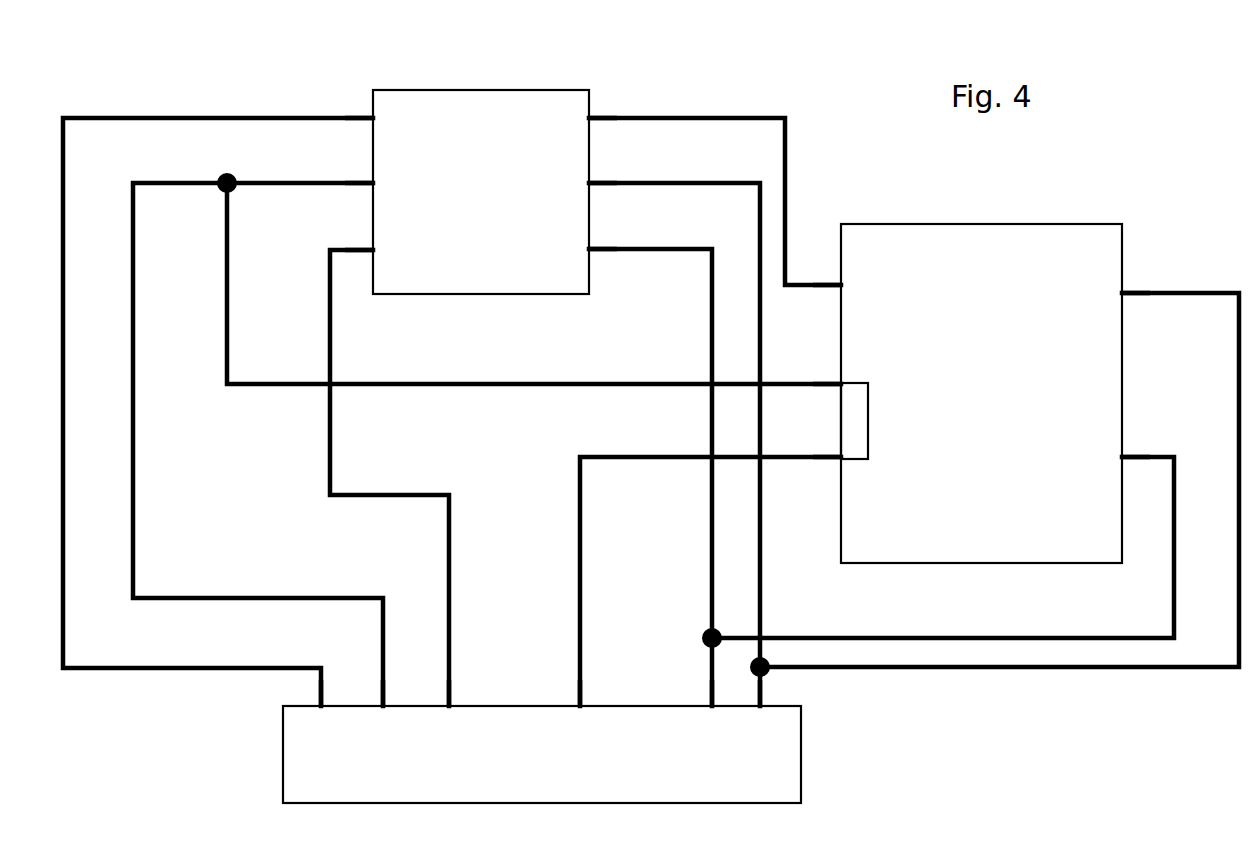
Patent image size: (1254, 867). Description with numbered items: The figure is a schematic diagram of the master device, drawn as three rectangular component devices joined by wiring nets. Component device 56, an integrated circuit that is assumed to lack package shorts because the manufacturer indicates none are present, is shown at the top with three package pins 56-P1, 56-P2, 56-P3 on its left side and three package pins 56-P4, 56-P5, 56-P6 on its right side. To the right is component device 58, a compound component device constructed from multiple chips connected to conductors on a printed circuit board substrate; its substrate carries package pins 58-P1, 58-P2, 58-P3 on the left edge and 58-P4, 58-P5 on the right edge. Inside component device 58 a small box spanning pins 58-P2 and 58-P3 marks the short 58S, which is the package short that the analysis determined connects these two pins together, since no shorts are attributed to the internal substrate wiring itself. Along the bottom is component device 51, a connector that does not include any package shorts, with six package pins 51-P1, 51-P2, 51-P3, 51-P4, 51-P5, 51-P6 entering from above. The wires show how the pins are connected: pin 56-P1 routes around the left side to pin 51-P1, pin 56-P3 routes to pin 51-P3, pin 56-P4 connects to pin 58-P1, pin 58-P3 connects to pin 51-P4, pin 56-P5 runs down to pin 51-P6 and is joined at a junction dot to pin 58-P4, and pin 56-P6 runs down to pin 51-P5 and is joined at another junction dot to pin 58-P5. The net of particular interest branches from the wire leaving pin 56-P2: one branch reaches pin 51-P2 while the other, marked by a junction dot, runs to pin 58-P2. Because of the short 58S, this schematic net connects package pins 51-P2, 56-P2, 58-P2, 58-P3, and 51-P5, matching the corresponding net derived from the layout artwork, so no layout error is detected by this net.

The component device 56 is at (473, 90).
The package pin 56-P1 is at (399, 120).
The package pin 56-P2 is at (399, 185).
The package pin 56-P3 is at (399, 252).
The package pin 56-P4 is at (563, 120).
The package pin 56-P5 is at (563, 190).
The package pin 56-P6 is at (563, 255).
The component device 58 is at (975, 224).
The short 58S is at (870, 412).
The package pin 58-P1 is at (870, 287).
The package pin 58-P2 is at (866, 364).
The package pin 58-P3 is at (865, 478).
The package pin 58-P4 is at (1096, 294).
The package pin 58-P5 is at (1098, 457).
The component device 51 is at (518, 803).
The package pin 51-P1 is at (326, 714).
The package pin 51-P2 is at (381, 728).
The package pin 51-P3 is at (457, 714).
The package pin 51-P4 is at (577, 714).
The package pin 51-P5 is at (702, 714).
The package pin 51-P6 is at (757, 728).